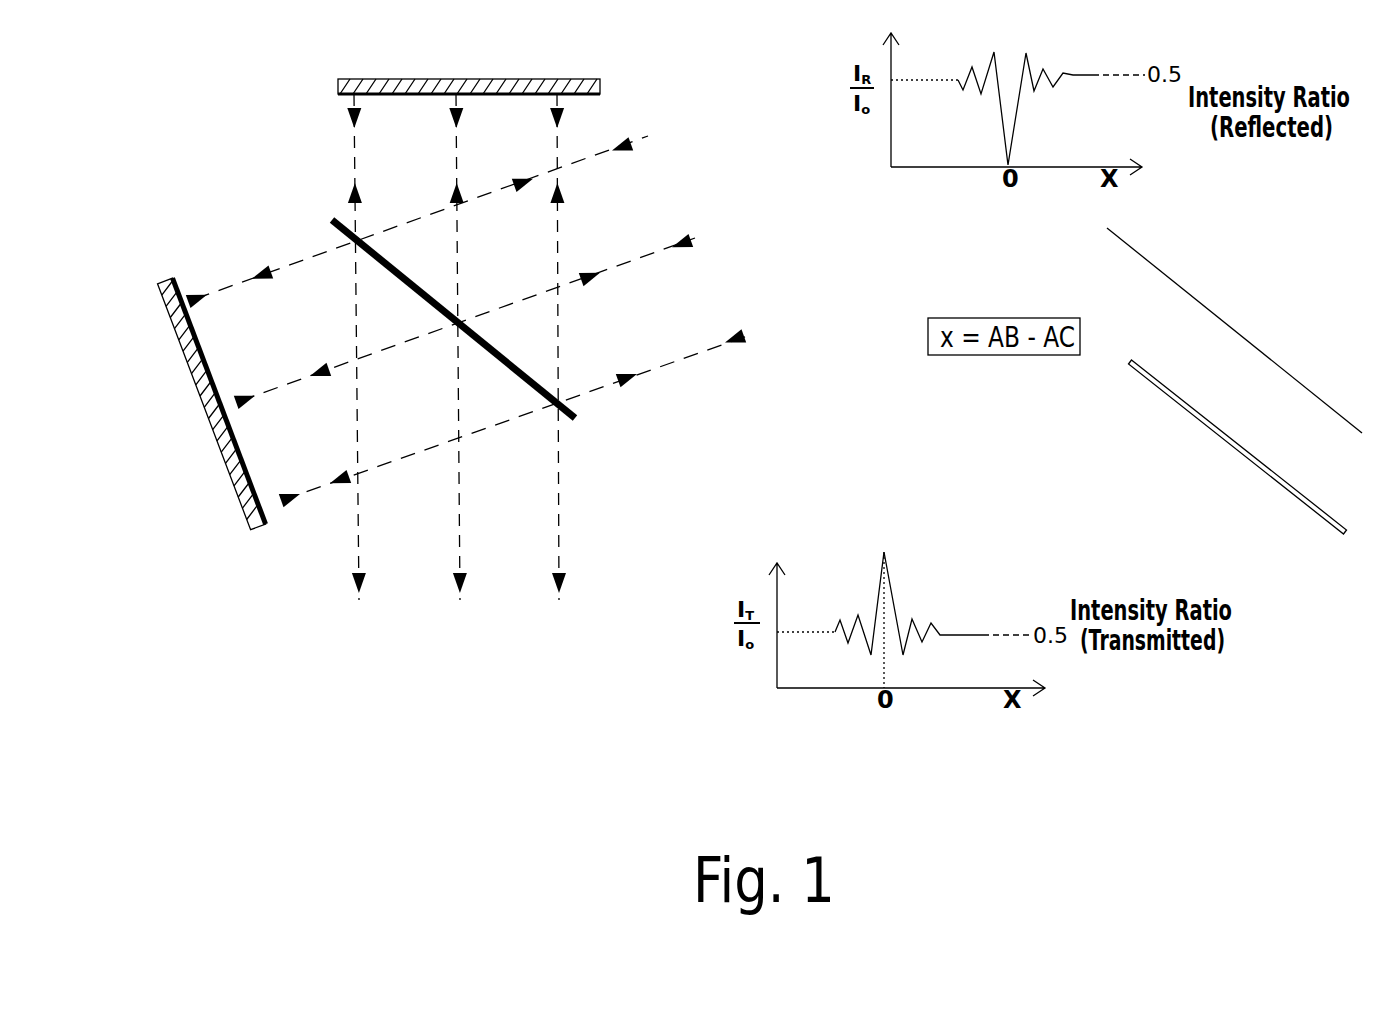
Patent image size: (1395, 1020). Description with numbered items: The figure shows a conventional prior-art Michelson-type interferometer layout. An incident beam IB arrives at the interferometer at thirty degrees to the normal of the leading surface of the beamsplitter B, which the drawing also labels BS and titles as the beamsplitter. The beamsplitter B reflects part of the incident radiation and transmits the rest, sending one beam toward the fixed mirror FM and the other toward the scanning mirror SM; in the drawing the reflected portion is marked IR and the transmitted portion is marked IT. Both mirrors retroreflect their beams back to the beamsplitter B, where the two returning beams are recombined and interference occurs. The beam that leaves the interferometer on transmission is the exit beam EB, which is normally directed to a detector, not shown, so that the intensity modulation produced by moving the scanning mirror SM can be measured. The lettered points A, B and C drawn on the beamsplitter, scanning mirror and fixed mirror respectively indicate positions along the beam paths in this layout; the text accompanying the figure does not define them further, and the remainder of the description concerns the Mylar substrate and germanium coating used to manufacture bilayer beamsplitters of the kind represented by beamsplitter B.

The scanning mirror SM is at (467, 66).
The fixed mirror FM is at (195, 404).
The beamsplitter BS is at (359, 303).
The incident beam IB is at (594, 285).
The reflected beam IR is at (549, 418).
The transmitted beam (output) IT is at (507, 405).
The exit beam EB is at (474, 645).
The beamsplitter point A is at (477, 296).
The beamsplitter B is at (485, 121).
The fixed mirror point C is at (227, 383).